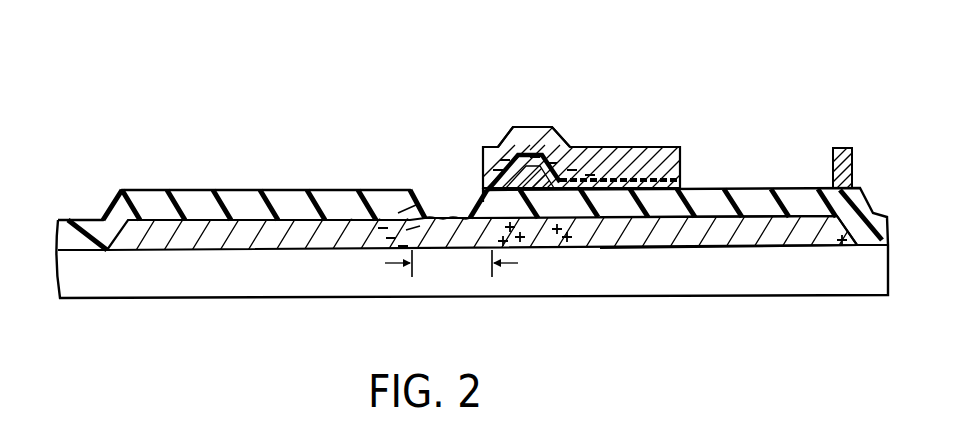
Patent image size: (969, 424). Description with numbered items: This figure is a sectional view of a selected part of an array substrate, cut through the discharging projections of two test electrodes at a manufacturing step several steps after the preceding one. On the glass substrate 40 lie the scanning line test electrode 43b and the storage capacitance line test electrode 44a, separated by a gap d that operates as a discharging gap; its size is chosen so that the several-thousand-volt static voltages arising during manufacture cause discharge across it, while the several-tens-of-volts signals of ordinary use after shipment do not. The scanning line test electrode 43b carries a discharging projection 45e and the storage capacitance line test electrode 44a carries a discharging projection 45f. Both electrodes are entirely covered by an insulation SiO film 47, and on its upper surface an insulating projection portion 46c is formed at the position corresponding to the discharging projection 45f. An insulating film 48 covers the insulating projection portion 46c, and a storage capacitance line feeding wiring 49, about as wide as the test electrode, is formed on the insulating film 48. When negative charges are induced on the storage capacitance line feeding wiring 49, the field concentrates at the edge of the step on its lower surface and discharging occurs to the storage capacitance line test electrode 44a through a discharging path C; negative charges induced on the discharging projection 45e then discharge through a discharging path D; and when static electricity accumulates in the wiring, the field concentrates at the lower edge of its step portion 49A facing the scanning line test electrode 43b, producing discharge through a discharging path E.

The glass substrate 40 is at (765, 283).
The scanning line test electrode 43b is at (183, 238).
The storage capacitance line test electrode 44a is at (665, 232).
The discharging projection 45e is at (398, 248).
The discharging projection 45f is at (510, 234).
The insulation SiO film 47 is at (78, 233).
The insulating projection portion 46c is at (566, 150).
The insulating film 48 is at (680, 182).
The storage capacitance line feeding wiring 49 is at (667, 147).
The step portion 49A is at (517, 125).
The discharging path C is at (565, 200).
The discharging path D is at (433, 223).
The discharging path E is at (483, 198).
The gap d is at (451, 264).